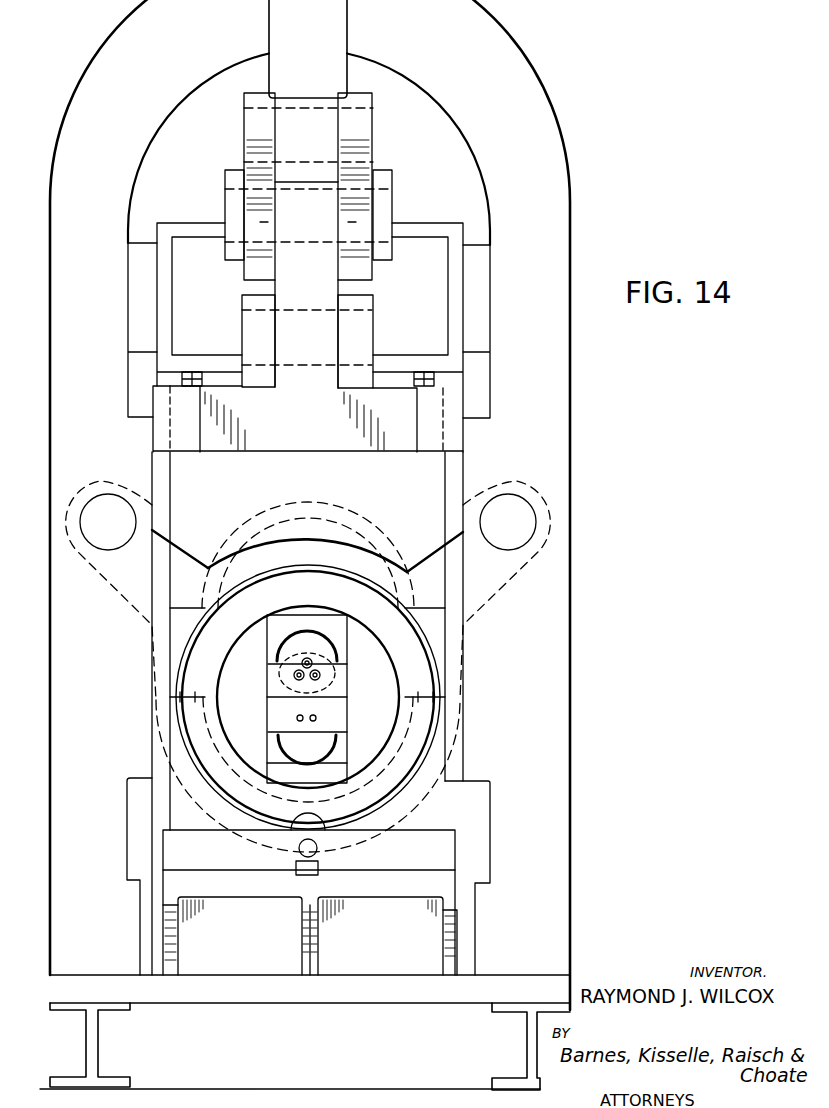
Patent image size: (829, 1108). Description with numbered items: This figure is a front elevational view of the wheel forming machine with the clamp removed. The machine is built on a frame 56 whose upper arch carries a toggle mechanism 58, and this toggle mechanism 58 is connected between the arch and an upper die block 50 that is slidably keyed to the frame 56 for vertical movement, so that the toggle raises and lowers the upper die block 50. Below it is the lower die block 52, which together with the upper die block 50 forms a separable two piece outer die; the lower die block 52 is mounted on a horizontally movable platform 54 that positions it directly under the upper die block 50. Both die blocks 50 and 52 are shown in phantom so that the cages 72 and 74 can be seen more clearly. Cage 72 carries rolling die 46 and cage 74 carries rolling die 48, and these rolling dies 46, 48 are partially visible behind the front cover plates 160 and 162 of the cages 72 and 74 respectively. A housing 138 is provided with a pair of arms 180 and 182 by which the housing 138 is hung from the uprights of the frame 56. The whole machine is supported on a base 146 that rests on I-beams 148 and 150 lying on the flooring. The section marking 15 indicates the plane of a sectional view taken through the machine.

The frame 56 is at (513, 38).
The toggle mechanism 58 is at (384, 145).
The arm 180 is at (187, 545).
The arm 182 is at (433, 546).
The housing 138 is at (251, 553).
The upper die block 50 is at (328, 516).
The lower die block 52 is at (402, 756).
The section line 15- 15 is at (322, 813).
The rolling die 46 is at (340, 648).
The cage 72 is at (360, 676).
The front cover plate 160 is at (276, 689).
The front cover plate 162 is at (268, 713).
The cage 74 is at (361, 724).
The rolling die 48 is at (351, 759).
The platform 54 is at (450, 853).
The base 146 is at (548, 975).
The I-beam 148 is at (96, 1038).
The I-beam 150 is at (527, 1040).